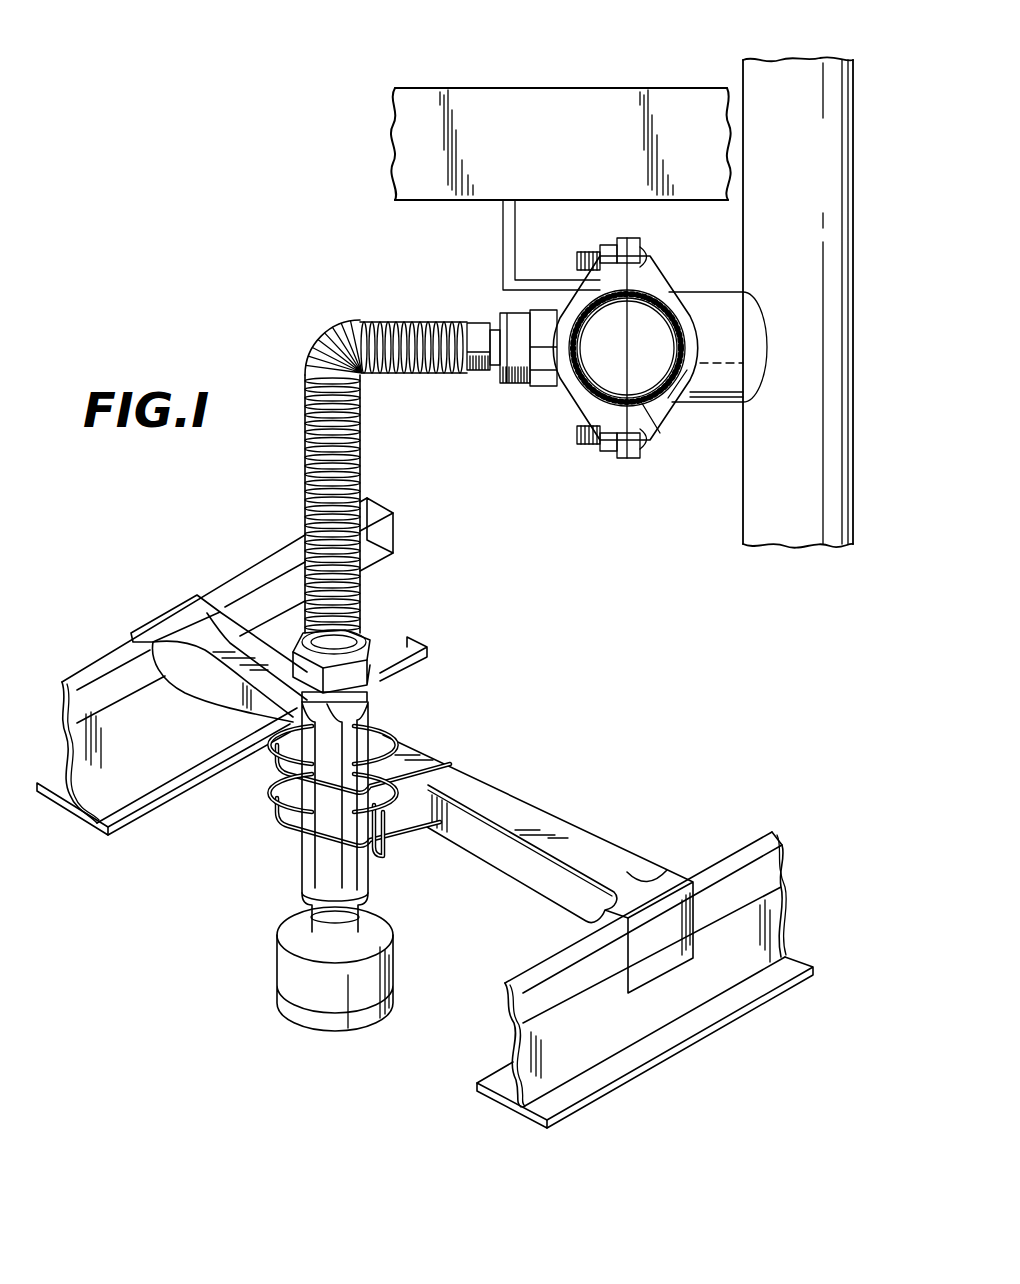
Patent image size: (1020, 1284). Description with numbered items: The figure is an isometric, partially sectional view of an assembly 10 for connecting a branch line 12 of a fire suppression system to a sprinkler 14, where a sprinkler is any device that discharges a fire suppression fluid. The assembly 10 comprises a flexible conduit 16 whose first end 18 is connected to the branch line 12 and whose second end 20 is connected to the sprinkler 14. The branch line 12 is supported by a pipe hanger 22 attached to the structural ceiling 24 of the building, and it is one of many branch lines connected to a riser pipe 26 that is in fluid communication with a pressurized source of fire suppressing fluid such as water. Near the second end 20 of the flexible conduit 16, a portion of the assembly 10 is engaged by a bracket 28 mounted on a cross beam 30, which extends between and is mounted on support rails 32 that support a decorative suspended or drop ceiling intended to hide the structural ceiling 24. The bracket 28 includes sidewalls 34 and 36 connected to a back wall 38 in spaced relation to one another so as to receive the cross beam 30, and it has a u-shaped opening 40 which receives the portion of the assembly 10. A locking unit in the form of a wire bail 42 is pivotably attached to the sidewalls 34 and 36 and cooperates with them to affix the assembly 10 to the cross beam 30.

The assembly 10 is at (245, 276).
The branch line 12 is at (642, 378).
The sprinkler 14 is at (283, 968).
The flexible conduit 16 is at (306, 503).
The first end 18 is at (484, 374).
The second end 20 is at (378, 655).
The pipe hanger 22 is at (503, 264).
The structural ceiling 24 is at (555, 95).
The riser pipe 26 is at (748, 536).
The bracket 28 is at (227, 717).
The cross beam 30 is at (500, 802).
The support rails 32 is at (775, 936).
The sidewall 34 is at (283, 727).
The sidewall 36 is at (282, 800).
The back wall 38 is at (452, 762).
The u-shaped opening 40 is at (400, 822).
The wire bail 42 is at (293, 838).